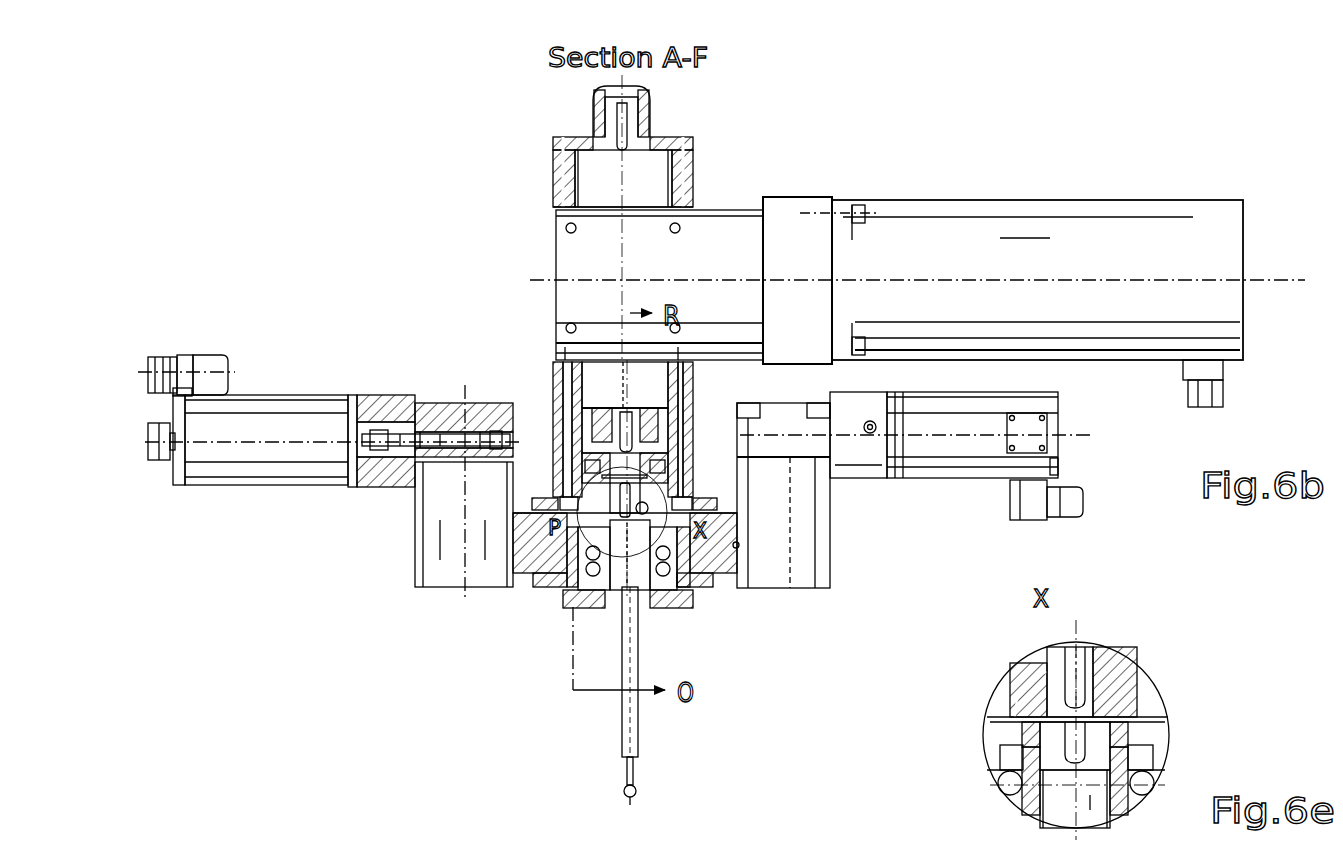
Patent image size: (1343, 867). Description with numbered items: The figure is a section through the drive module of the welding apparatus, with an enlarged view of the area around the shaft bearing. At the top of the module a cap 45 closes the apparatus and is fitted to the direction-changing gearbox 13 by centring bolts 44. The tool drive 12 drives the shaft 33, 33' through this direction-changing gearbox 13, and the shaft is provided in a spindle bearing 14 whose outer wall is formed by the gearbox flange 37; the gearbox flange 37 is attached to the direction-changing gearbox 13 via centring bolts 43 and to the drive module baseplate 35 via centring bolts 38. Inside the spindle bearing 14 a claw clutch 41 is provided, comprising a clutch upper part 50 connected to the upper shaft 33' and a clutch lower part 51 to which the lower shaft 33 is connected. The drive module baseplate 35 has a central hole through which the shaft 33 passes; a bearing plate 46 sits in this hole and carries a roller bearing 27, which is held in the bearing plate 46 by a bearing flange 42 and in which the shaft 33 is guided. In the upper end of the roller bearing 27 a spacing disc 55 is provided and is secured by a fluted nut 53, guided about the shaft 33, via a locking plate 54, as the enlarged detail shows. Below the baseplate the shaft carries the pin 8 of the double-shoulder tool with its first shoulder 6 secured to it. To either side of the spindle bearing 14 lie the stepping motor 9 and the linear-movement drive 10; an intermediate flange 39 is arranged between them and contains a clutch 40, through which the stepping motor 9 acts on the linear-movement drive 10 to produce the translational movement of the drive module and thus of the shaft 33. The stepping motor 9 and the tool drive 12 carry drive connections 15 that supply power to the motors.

In FIG. 6B, the first shoulder 6 is at (640, 784).
In FIG. 6B, the pin 8 is at (622, 765).
In FIG. 6B, the stepping motor 9 is at (232, 455).
In FIG. 6B, the linear-movement drive 10 is at (443, 562).
In FIG. 6B, the tool drive 12 is at (1010, 232).
In FIG. 6B, the direction-changing gearbox 13 is at (718, 230).
In FIG. 6B, the spindle bearing 14 is at (548, 378).
In FIG. 6B, the drive connections 15 is at (160, 355).
In FIG. 6B, the roller bearing 27 is at (693, 592).
In FIG. 6E, the roller bearing 27 is at (1000, 790).
In FIG. 6B, the shaft 33 is at (662, 672).
In FIG. 6E, the shaft 33 is at (1011, 799).
In FIG. 6B, the shaft 33' is at (707, 385).
In FIG. 6E, the shaft 33' is at (1131, 653).
In FIG. 6B, the drive module baseplate 35 is at (760, 577).
In FIG. 6B, the gearbox flange 37 is at (630, 437).
In FIG. 6B, the centring bolts 38 is at (697, 488).
In FIG. 6B, the intermediate flange 39 is at (377, 487).
In FIG. 6B, the clutch 40 is at (352, 487).
In FIG. 6B, the claw clutch 41 is at (510, 443).
In FIG. 6B, the bearing flange 42 is at (657, 582).
In FIG. 6B, the centring bolts 43 is at (699, 420).
In FIG. 6B, the centring bolts 44 is at (693, 160).
In FIG. 6B, the cap 45 is at (651, 103).
In FIG. 6B, the bearing plate 46 is at (540, 577).
In FIG. 6E, the bearing plate 46 is at (1167, 743).
In FIG. 6B, the clutch upper part 50 is at (551, 392).
In FIG. 6B, the clutch lower part 51 is at (573, 457).
In FIG. 6E, the clutch lower part 51 is at (1127, 690).
In FIG. 6E, the fluted nut 53 is at (1047, 685).
In FIG. 6E, the locking plate 54 is at (1023, 720).
In FIG. 6E, the spacing disc 55 is at (995, 752).